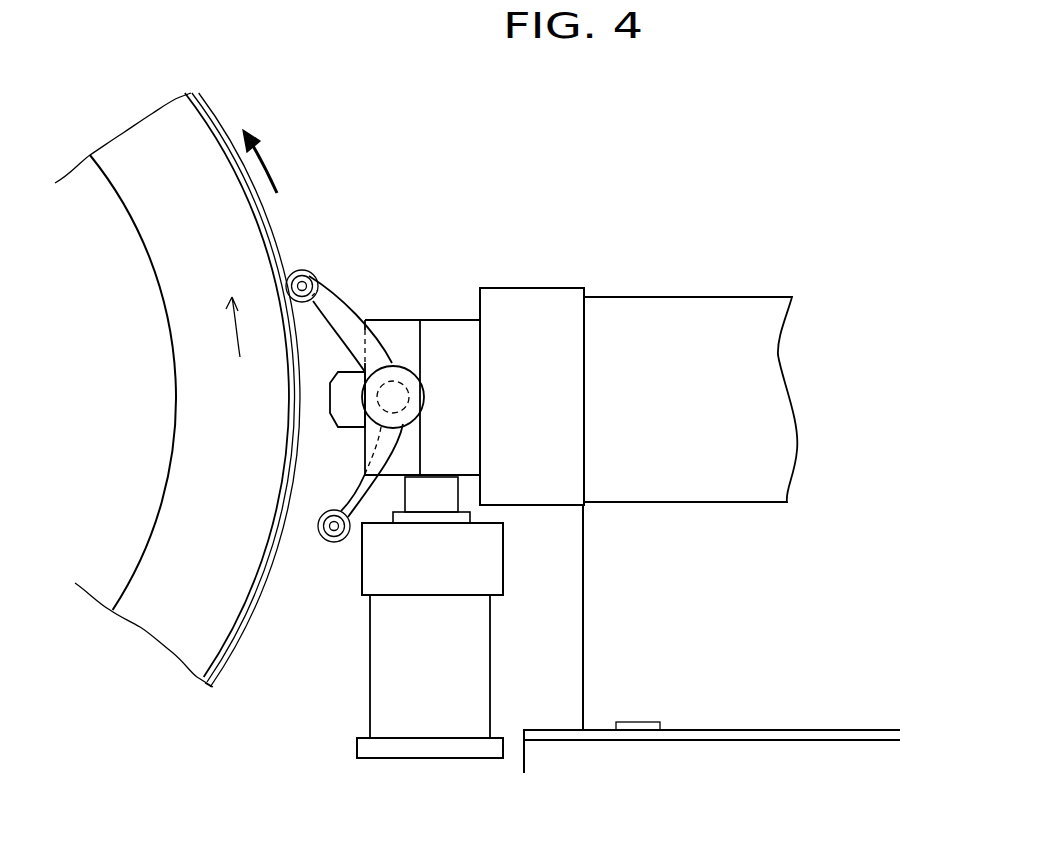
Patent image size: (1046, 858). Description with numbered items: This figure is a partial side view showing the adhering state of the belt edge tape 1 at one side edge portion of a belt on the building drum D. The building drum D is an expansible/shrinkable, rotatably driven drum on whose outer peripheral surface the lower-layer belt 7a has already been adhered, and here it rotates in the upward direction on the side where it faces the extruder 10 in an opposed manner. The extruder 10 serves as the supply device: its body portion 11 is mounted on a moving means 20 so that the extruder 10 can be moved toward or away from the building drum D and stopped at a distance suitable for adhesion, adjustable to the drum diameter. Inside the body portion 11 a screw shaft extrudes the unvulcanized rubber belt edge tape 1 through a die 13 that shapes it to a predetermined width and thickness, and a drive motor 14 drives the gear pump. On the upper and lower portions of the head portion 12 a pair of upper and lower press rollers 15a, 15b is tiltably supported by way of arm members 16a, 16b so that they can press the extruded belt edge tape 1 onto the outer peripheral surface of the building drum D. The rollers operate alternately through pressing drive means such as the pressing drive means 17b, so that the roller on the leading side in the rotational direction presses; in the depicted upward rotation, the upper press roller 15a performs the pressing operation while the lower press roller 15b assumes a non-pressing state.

The belt edge tape 1 is at (272, 233).
The building drum D is at (197, 278).
The belt 7a is at (245, 632).
The extruder 10 is at (670, 266).
The body portion 11 is at (727, 332).
The head portion 12 is at (445, 333).
The die 13 is at (347, 410).
The drive motor 14 is at (385, 702).
The upper press roller 15a is at (308, 267).
The lower press roller 15b is at (342, 540).
The arm member 16a is at (343, 313).
The arm member 16b is at (353, 490).
The pressing drive means 17b is at (418, 397).
The moving means 20 is at (815, 765).